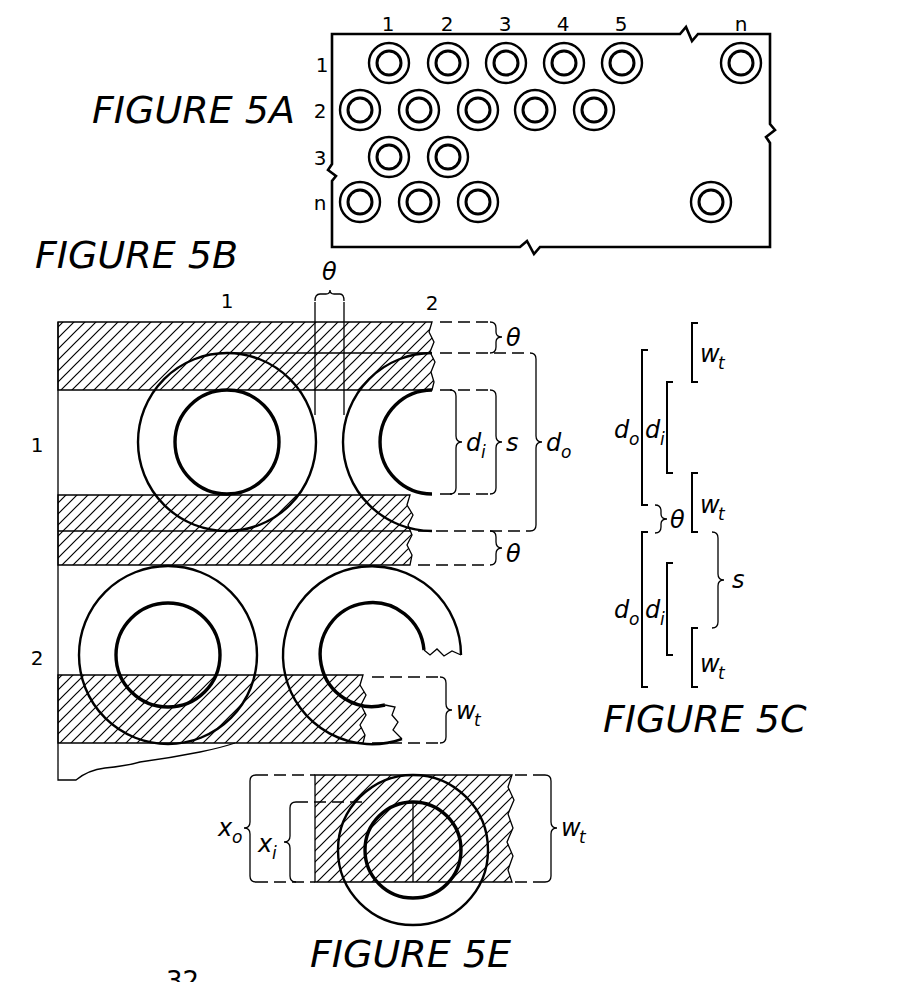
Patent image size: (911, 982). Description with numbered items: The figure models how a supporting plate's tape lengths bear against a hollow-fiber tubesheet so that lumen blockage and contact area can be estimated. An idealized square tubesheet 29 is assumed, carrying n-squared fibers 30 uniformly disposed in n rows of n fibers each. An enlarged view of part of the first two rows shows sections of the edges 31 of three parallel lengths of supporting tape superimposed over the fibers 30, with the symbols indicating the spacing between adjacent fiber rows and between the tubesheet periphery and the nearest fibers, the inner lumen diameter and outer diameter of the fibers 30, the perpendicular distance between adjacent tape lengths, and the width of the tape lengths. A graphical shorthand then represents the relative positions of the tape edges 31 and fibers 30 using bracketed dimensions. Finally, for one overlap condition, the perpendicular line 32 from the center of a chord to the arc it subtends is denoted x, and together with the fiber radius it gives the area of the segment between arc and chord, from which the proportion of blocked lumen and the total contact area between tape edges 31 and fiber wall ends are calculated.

In FIG. 5A, the tubesheet 29 is at (587, 247).
In FIG. 5A, the fibers 30 is at (591, 131).
In FIG. 5B, the fibers 30 is at (140, 441).
In FIG. 5E, the fibers 30 is at (365, 897).
In FIG. 5B, the edges of supporting tape 31 is at (150, 330).
In FIG. 5E, the edges of supporting tape 31 is at (493, 873).
In FIG. 5E, the perpendicular line from chord center to arc 32 is at (415, 840).